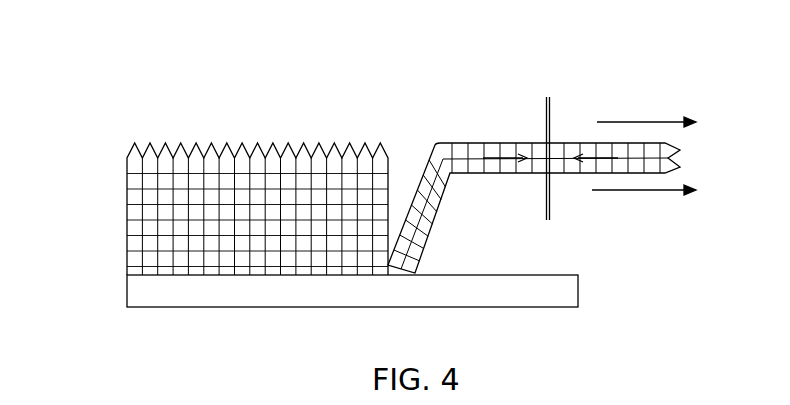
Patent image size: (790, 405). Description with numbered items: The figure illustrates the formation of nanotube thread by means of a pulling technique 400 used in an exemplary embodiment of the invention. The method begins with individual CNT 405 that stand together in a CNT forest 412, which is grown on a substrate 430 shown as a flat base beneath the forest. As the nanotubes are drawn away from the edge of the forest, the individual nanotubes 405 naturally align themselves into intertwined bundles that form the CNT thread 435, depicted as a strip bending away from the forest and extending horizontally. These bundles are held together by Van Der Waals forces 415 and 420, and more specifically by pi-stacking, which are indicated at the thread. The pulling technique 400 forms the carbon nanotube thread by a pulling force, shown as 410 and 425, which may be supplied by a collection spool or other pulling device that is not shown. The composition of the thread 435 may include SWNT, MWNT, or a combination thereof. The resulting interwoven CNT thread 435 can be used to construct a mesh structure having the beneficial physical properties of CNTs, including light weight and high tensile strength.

The pulling technique 400 is at (420, 42).
The individual CNT 405 is at (130, 150).
The CNT forest 412 is at (380, 97).
The Van Der Waals force 415 is at (548, 95).
The Van Der Waals force 420 is at (551, 212).
The pulling force 410 is at (640, 122).
The pulling force 425 is at (655, 191).
The substrate 430 is at (312, 303).
The CNT thread 435 is at (505, 174).